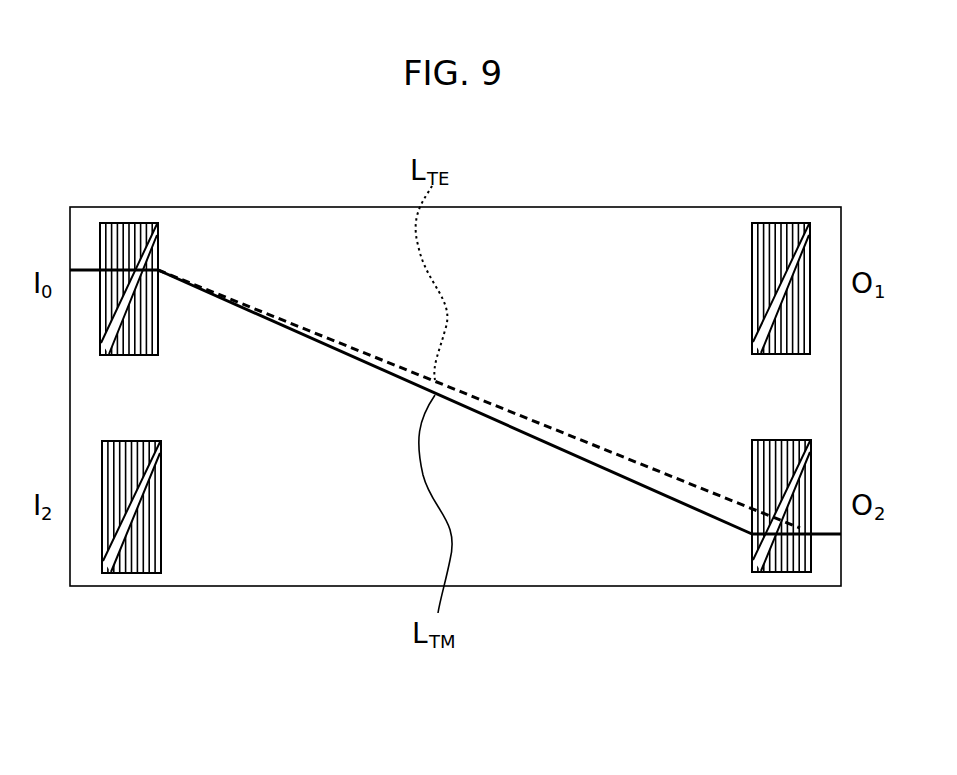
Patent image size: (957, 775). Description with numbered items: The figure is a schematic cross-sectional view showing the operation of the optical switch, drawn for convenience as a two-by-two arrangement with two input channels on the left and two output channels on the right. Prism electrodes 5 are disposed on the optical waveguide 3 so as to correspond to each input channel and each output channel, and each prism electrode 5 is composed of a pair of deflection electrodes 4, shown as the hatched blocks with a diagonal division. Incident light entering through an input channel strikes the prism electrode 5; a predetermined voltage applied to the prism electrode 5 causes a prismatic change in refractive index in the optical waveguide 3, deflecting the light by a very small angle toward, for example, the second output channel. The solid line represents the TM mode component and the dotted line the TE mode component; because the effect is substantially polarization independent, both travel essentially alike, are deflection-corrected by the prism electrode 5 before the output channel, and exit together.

The optical waveguide 3 is at (578, 207).
The deflection electrode 4 is at (125, 233).
The prism electrode 5 is at (188, 152).